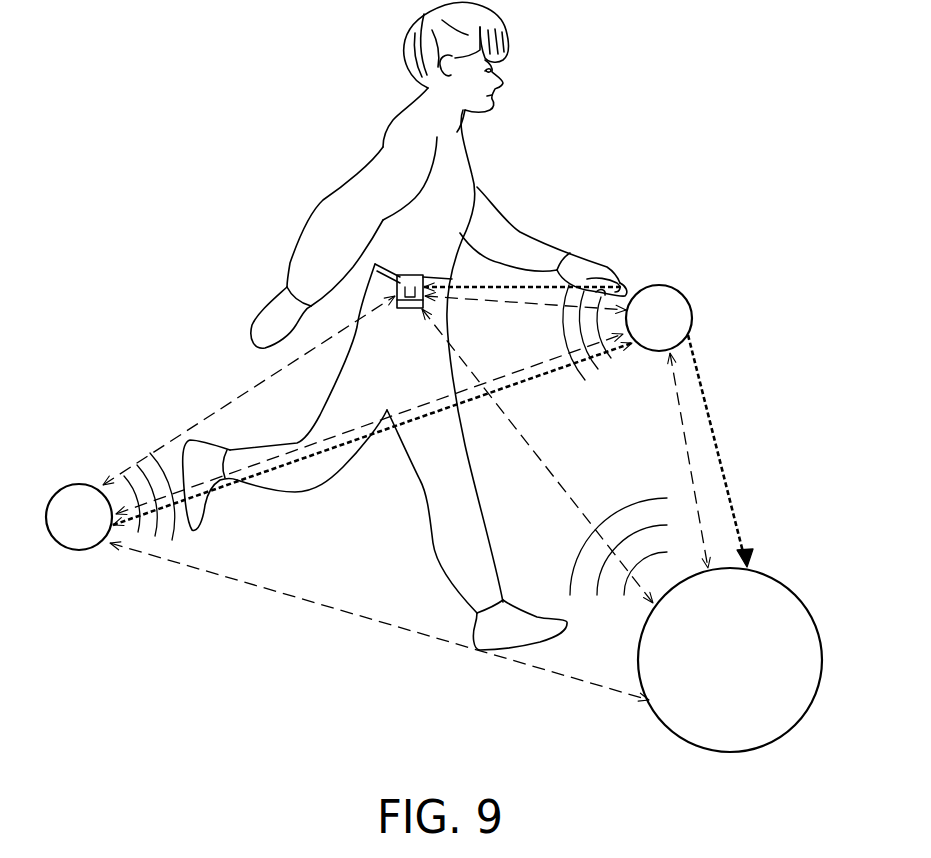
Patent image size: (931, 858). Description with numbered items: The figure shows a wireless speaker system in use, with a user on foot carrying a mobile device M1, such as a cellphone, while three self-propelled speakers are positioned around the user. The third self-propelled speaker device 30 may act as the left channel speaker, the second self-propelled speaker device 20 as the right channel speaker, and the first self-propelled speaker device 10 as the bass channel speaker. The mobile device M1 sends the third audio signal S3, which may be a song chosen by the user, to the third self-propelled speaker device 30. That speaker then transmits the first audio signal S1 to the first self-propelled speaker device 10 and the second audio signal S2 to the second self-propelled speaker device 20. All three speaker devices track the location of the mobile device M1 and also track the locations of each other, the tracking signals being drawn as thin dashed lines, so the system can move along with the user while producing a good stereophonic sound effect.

The first self-propelled speaker device 10 is at (730, 752).
The second self-propelled speaker device 20 is at (81, 484).
The third self-propelled speaker device 30 is at (660, 285).
The mobile device M1 is at (410, 275).
The first audio signal S1 is at (720, 445).
The second audio signal S2 is at (548, 372).
The third audio signal S3 is at (485, 289).